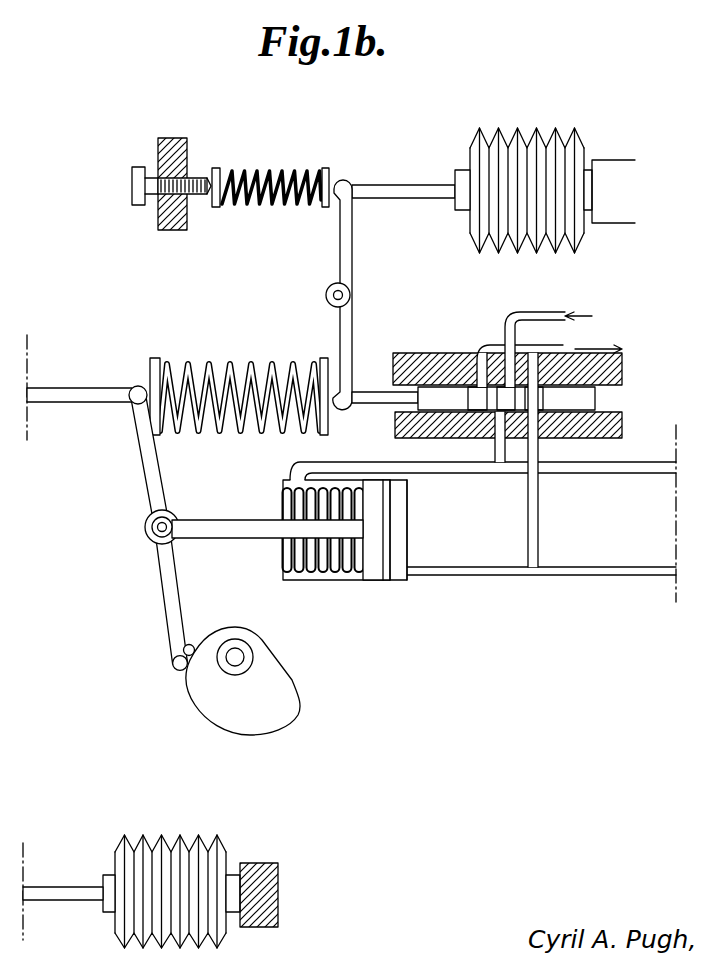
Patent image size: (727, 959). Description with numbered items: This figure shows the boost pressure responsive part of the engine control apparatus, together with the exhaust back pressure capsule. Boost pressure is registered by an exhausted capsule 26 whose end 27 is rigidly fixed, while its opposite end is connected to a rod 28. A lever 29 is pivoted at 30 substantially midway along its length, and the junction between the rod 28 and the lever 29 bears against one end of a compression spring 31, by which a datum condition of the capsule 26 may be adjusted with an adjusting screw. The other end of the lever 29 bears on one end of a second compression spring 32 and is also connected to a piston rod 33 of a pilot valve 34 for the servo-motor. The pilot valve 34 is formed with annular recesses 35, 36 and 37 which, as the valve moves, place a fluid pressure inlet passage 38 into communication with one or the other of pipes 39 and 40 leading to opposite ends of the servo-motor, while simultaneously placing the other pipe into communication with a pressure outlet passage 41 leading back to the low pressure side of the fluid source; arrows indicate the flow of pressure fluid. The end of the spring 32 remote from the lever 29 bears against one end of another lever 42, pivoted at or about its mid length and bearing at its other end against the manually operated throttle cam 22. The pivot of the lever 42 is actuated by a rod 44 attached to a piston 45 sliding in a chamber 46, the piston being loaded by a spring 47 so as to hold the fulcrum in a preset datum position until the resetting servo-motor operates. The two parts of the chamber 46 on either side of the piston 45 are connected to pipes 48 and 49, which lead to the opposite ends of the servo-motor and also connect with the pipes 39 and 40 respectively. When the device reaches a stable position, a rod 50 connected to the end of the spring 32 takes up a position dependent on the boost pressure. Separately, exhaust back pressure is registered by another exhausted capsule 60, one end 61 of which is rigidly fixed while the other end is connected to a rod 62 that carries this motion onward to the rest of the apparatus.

The throttle cam 22 is at (200, 704).
The exhausted capsule 26 is at (556, 135).
The end of the capsule 27 is at (588, 168).
The rod 28 is at (405, 184).
The lever 29 is at (340, 262).
The pivot 30 is at (322, 298).
The compression spring 31 is at (282, 170).
The second compression spring 32 is at (246, 360).
The piston rod 33 is at (370, 404).
The pilot valve 34 is at (445, 395).
The annular recess 35 is at (478, 413).
The annular recess 36 is at (506, 413).
The annular recess 37 is at (535, 413).
The fluid pressure inlet passage 38 is at (537, 311).
The pipe 39 is at (497, 445).
The pipe 40 is at (538, 497).
The pressure outlet passage 41 is at (590, 313).
The lever 42 is at (142, 502).
The rod 44 is at (234, 520).
The piston 45 is at (348, 547).
The chamber 46 is at (400, 512).
The spring 47 is at (324, 575).
The pipe 48 is at (643, 465).
The pipe 49 is at (567, 576).
The rod 50 is at (92, 388).
The exhausted capsule 60 is at (164, 840).
The end of the capsule 61 is at (240, 870).
The rod 62 is at (62, 901).